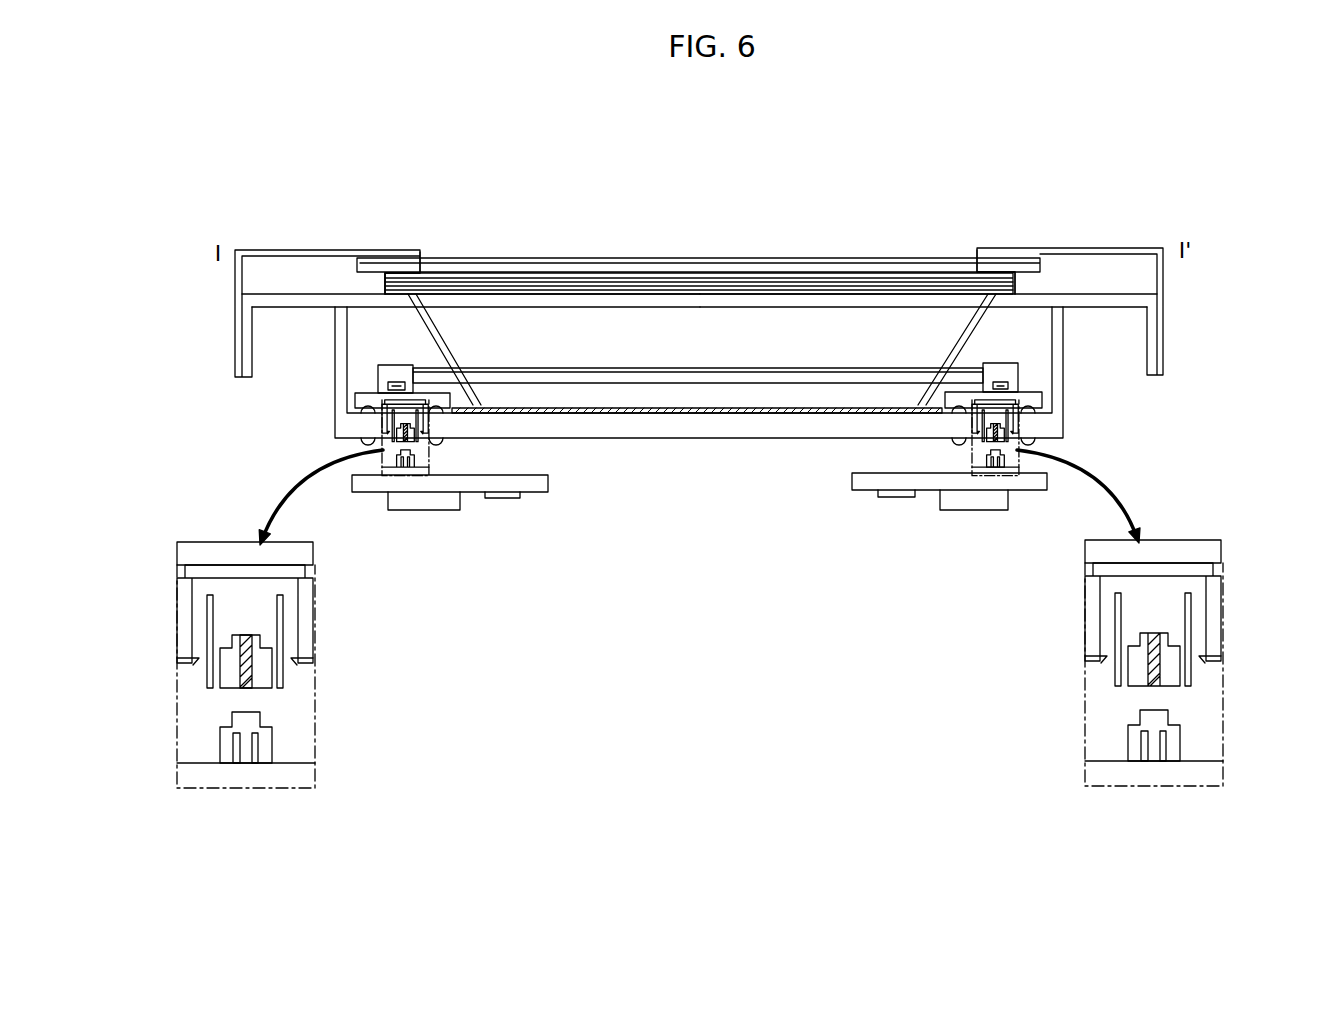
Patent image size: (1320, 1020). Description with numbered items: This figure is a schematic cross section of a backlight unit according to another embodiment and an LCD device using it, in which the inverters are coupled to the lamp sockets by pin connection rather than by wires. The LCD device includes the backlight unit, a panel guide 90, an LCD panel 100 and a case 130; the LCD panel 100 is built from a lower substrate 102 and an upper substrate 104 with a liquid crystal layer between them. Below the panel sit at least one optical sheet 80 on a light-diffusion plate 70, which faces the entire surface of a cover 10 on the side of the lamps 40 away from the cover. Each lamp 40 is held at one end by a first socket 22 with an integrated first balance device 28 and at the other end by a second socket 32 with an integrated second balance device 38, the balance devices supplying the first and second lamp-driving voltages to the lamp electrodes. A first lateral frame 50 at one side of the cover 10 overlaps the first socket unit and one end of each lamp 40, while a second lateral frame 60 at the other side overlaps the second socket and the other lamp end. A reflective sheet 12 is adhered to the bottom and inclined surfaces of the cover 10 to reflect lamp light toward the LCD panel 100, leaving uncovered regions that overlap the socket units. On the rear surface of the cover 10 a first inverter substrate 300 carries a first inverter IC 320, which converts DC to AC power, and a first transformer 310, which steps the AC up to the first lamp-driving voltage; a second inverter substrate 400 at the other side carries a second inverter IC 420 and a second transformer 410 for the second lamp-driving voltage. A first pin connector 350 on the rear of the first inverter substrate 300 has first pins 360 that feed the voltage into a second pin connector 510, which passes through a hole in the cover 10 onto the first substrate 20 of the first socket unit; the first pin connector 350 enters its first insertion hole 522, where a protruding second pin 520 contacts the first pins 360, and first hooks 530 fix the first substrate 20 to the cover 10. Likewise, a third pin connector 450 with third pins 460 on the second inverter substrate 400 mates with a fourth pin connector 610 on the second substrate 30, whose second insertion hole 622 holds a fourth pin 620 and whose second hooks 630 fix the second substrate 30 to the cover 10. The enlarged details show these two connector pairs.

The cover 10 is at (640, 432).
The reflective sheet 12 is at (712, 415).
The first substrate 20 is at (362, 402).
The first socket 22 is at (395, 367).
The first balance device 28 is at (397, 387).
The second substrate 30 is at (1038, 400).
The second socket 32 is at (1000, 367).
The second balance device 38 is at (990, 383).
The lamp 40 is at (610, 370).
The first lateral frame 50 is at (284, 302).
The second lateral frame 60 is at (1108, 300).
The light-diffusion plate 70 is at (806, 290).
The optical sheet 80 is at (748, 282).
The panel guide 90 is at (328, 272).
The LCD panel 100 is at (698, 224).
The lower substrate 102 is at (503, 194).
The upper substrate 104 is at (494, 257).
The case 130 is at (272, 253).
The first inverter substrate 300 is at (548, 487).
The first transformer 310 is at (425, 509).
The first inverter IC 320 is at (505, 498).
The first pin connector 350 is at (225, 743).
The first pin 360 is at (257, 752).
The second inverter substrate 400 is at (852, 480).
The second transformer 410 is at (975, 509).
The second inverter IC 420 is at (898, 497).
The third pin connector 450 is at (1018, 478).
The third pin 460 is at (1142, 745).
The second pin connector 510 is at (223, 615).
The second pin 520 is at (240, 677).
The first insertion hole 522 is at (263, 663).
The first hook 530 is at (192, 662).
The fourth pin connector 610 is at (1005, 418).
The fourth pin 620 is at (1160, 672).
The second insertion hole 622 is at (1137, 660).
The second hook 630 is at (1202, 662).